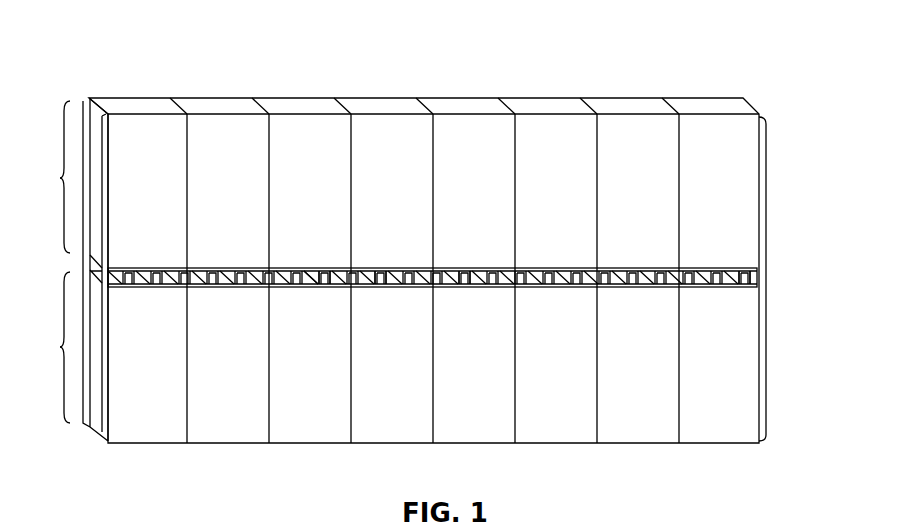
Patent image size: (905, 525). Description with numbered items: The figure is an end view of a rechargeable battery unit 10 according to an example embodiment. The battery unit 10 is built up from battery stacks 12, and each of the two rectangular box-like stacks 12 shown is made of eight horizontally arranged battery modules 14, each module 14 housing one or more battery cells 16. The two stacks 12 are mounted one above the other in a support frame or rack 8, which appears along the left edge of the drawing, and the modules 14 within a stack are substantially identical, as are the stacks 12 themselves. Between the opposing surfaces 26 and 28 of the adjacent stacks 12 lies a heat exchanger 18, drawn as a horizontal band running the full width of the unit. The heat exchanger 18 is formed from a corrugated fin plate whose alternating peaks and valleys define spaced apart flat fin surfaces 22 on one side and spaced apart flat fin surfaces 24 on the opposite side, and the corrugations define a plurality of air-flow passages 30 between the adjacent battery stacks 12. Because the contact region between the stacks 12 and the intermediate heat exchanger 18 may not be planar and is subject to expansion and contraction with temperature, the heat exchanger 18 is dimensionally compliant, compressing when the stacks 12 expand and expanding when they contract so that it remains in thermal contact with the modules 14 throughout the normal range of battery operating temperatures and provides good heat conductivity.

The support frame or rack 8 is at (83, 122).
The rechargeable battery unit 10 is at (602, 82).
The battery stack 12 is at (48, 262).
The battery module 14 is at (553, 107).
The battery cell 16 is at (137, 196).
The heat exchanger 18 is at (735, 287).
The flat fin surface 22 is at (364, 270).
The flat fin surface 24 is at (325, 288).
The opposing surface of stack 26 is at (380, 288).
The opposing surface of stack 28 is at (312, 270).
The air-flow passage 30 is at (460, 270).